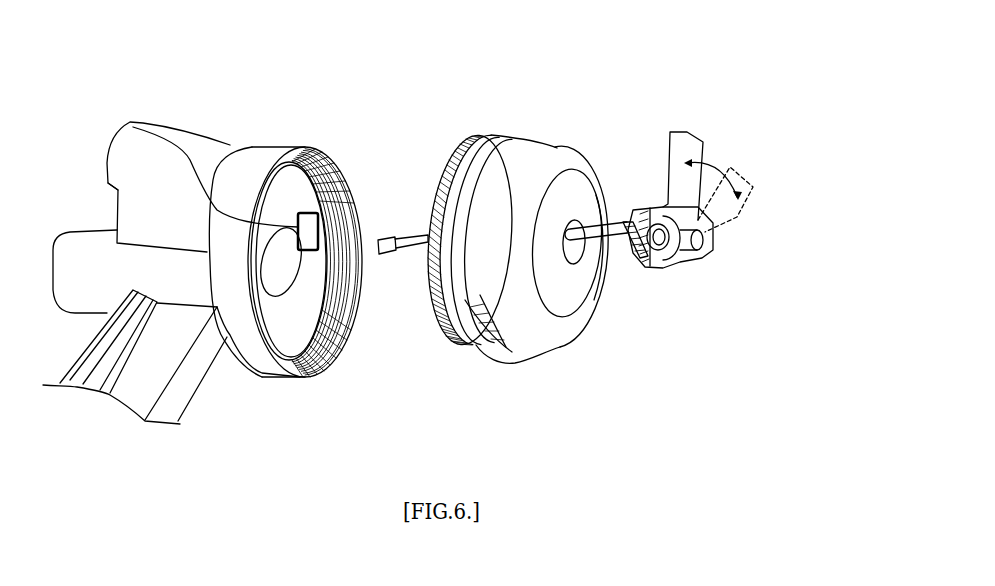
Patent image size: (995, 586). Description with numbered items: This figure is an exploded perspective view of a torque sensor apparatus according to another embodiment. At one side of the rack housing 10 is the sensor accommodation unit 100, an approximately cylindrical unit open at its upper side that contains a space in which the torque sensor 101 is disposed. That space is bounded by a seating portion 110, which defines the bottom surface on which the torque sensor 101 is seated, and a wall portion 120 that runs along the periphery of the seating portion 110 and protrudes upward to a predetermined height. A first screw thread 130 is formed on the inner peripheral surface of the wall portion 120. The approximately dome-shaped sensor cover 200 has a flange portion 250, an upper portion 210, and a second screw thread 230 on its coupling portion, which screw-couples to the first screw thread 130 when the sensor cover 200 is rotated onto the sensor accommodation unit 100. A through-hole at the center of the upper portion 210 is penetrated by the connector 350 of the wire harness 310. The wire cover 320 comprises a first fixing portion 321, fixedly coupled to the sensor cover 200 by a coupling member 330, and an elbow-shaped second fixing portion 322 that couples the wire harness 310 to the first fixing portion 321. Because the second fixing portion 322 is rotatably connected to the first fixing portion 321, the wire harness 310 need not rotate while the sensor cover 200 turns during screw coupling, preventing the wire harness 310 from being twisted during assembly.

The rack housing 10 is at (147, 390).
The sensor accommodation unit 100 is at (228, 258).
The torque sensor 101 is at (150, 130).
The seating portion 110 is at (290, 360).
The wall portion 120 is at (242, 168).
The first screw thread 130 is at (348, 357).
The sensor cover 200 is at (519, 216).
The upper portion 210 is at (567, 193).
The second screw thread 230 is at (505, 352).
The flange portion 250 is at (467, 133).
The wire harness 310 is at (703, 143).
The wire cover 320 is at (740, 229).
The first fixing portion 321 is at (660, 268).
The second fixing portion 322 is at (700, 220).
The coupling member 330 is at (655, 268).
The connector 350 is at (393, 255).